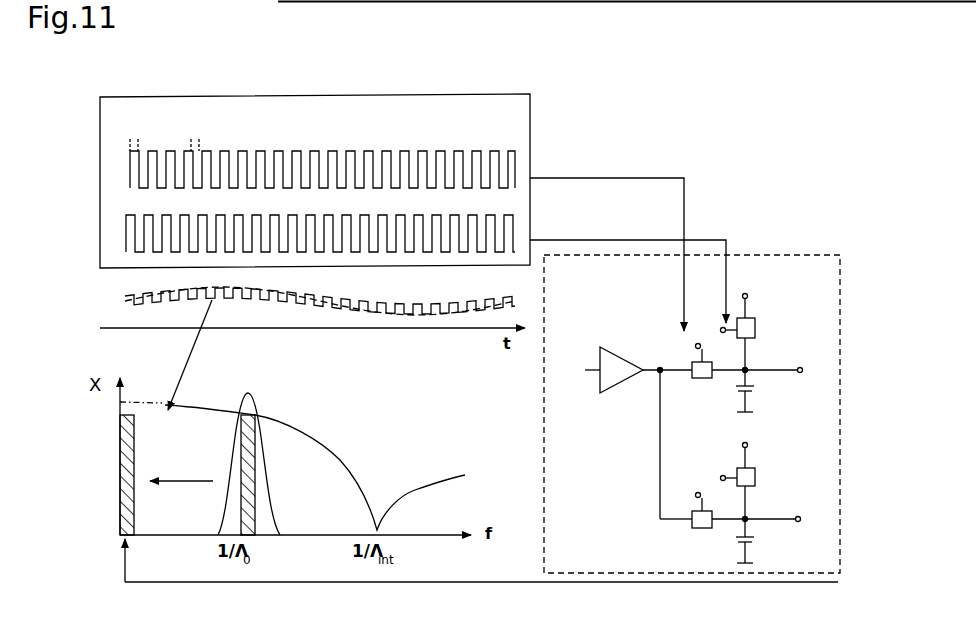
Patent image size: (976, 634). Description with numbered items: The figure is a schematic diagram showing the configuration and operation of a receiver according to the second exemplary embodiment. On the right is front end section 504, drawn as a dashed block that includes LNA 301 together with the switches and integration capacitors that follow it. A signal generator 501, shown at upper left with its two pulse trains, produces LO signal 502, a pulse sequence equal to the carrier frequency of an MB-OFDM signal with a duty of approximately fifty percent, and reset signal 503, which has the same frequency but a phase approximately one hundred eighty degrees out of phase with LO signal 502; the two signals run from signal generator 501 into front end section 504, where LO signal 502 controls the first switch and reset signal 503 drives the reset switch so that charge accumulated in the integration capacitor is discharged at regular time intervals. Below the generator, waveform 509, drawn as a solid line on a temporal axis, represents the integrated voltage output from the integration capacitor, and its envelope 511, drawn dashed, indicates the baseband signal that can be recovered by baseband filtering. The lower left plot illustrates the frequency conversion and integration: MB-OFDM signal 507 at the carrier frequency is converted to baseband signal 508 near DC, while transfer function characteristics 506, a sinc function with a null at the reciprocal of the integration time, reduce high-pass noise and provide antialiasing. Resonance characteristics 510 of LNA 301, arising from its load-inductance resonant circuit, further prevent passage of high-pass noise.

The signal generator 501 is at (264, 95).
The LO signal 502 is at (628, 172).
The reset signal 503 is at (632, 237).
The front end section 504 is at (544, 410).
The LNA 301 is at (609, 347).
The transfer function characteristics 506 is at (285, 428).
The MB-OFDM signal 507 is at (255, 536).
The baseband signal 508 is at (133, 452).
The waveform 509 is at (232, 298).
The resonance characteristics 510 is at (250, 396).
The envelope 511 is at (300, 292).